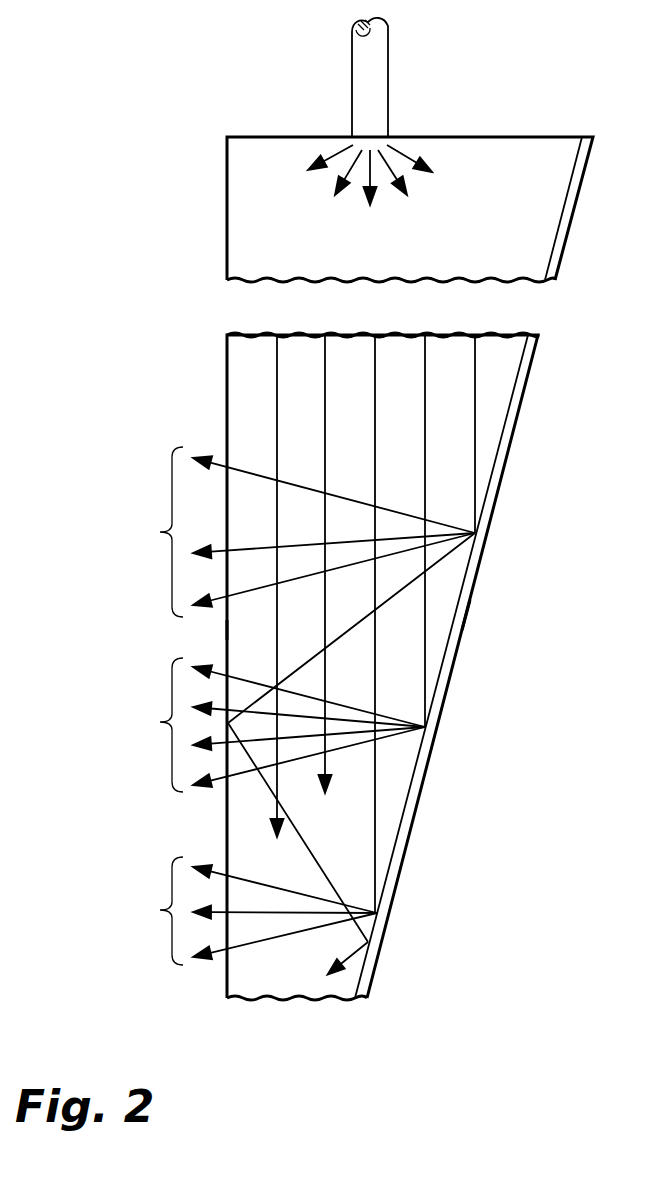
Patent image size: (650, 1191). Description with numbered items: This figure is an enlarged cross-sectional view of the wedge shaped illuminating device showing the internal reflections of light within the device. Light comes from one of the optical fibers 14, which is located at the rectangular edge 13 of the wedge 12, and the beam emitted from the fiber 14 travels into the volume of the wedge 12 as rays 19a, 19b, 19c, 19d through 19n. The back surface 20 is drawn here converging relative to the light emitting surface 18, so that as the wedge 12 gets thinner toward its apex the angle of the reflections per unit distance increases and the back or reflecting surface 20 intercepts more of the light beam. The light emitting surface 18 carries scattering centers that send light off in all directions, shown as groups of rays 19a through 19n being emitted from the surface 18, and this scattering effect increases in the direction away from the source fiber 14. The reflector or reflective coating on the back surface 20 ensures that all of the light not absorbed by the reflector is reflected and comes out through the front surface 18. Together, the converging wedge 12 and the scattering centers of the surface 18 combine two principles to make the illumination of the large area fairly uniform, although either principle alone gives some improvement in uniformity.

The wedge 12 is at (297, 972).
The rectangular edge 13 is at (537, 137).
The optical fiber 14 is at (388, 70).
The light emitting surface 18 is at (227, 630).
The ray 19a is at (306, 172).
The ray 19b is at (332, 195).
The ray 19c is at (370, 207).
The ray 19d is at (407, 198).
The ray 19n is at (434, 173).
The back surface 20 is at (455, 610).